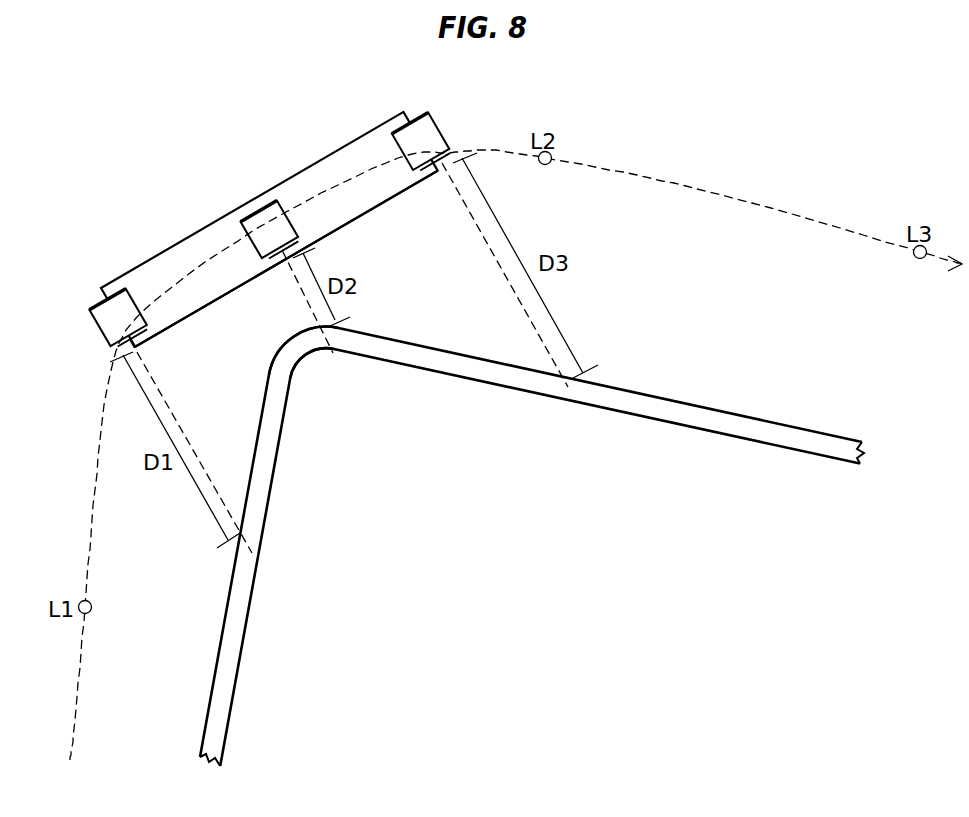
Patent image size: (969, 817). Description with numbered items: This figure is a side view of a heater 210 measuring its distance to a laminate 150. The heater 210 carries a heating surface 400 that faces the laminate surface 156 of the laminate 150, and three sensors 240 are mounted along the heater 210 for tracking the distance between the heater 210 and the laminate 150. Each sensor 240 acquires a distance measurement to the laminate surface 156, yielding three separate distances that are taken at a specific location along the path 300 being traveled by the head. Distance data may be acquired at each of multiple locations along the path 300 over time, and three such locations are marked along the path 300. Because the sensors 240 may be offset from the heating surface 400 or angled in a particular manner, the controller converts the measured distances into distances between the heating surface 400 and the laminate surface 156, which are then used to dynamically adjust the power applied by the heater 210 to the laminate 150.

The laminate 150 is at (803, 427).
The laminate surface 156 is at (280, 340).
The heater 210 is at (343, 143).
The sensors 240 is at (97, 307).
The path 300 is at (752, 203).
The heating surface 400 is at (384, 207).